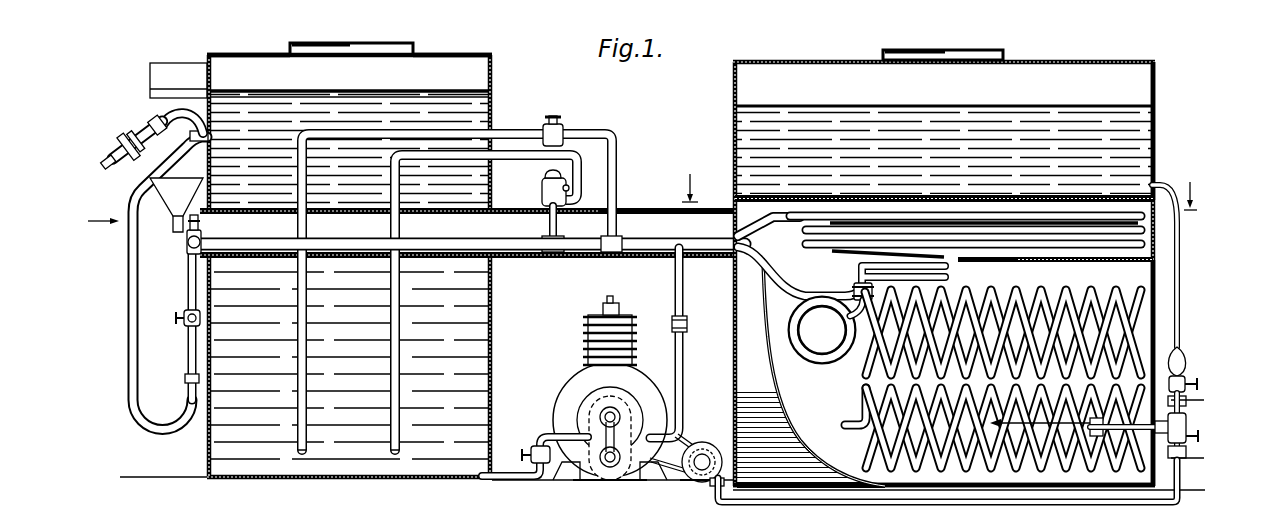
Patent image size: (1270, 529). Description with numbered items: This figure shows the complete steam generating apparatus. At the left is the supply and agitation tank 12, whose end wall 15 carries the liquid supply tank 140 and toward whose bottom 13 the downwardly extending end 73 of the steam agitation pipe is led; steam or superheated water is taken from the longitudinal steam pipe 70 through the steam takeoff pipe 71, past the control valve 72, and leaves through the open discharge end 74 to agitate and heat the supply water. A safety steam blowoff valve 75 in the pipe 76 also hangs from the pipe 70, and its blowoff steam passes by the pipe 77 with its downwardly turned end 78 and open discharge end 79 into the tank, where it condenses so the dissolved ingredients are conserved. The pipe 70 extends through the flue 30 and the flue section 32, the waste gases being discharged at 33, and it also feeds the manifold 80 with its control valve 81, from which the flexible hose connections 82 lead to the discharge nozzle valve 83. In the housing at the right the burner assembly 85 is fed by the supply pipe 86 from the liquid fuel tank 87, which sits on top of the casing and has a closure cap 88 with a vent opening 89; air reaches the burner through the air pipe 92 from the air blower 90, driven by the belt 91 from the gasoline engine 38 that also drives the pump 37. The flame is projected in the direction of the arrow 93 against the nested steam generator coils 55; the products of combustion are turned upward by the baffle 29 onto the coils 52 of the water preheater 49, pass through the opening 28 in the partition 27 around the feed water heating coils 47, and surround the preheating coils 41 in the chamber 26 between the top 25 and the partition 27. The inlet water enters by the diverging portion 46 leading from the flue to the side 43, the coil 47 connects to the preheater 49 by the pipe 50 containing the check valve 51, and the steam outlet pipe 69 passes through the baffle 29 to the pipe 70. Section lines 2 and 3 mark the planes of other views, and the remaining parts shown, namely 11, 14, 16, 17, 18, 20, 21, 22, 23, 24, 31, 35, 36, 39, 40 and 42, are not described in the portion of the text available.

The section line 2- 2 is at (937, 189).
The section line 3- 3 is at (92, 217).
The floor 11 is at (155, 477).
The supply and agitation tank 12 is at (200, 95).
The bottom of the tank 13 is at (345, 480).
The upper tank 14 is at (495, 80).
The end wall 15 is at (205, 62).
The cover 16 is at (452, 56).
The lid handle 17 is at (392, 49).
The lid 18 is at (343, 52).
The second tank 20 is at (1165, 264).
The tank bottom 21 is at (1018, 491).
The tank side wall 22 is at (1158, 310).
The casing wall 23 is at (730, 92).
The partitioned chamber 24 is at (745, 382).
The top 25 is at (815, 197).
The chamber 26 is at (1150, 237).
The partition 27 is at (1065, 262).
The opening 28 is at (960, 262).
The baffle 29 is at (800, 432).
The flue 30 is at (635, 210).
The plate 31 is at (695, 212).
The section of the flue 32 is at (365, 210).
The discharge 33 is at (175, 218).
The suction pipe 35 is at (510, 480).
The valve 36 is at (535, 450).
The pump 37 is at (595, 412).
The gasoline engine 38 is at (595, 348).
The discharge pipe 39 is at (676, 370).
The pipe coupling 40 is at (688, 318).
The preheating coils 41 is at (975, 232).
The heating tube 42 is at (1050, 232).
The side 43 is at (915, 210).
The diverging portion 46 is at (757, 218).
The feed water heating coils 47 is at (855, 267).
The water preheater 49 is at (826, 352).
The pipe 50 is at (856, 306).
The check valve 51 is at (853, 290).
The coils 52 is at (840, 363).
The steam generator coils 55 is at (1060, 478).
The steam outlet pipe 69 is at (762, 268).
The longitudinal steam pipe 70 is at (655, 252).
The steam takeoff pipe 71 is at (505, 136).
The control valve 72 is at (562, 126).
The downwardly extending end 73 is at (305, 325).
The open discharge end 74 is at (300, 452).
The safety steam blowoff valve 75 is at (540, 186).
The pipe 76 is at (545, 227).
The pipe 77 is at (425, 160).
The downwardly turned end 78 is at (397, 345).
The open discharge end 79 is at (397, 452).
The manifold 80 is at (190, 349).
The control valve 81 is at (186, 312).
The flexible hose connections 82 is at (127, 290).
The discharge nozzle valve 83 is at (143, 115).
The burner assembly 85 is at (1196, 417).
The supply pipe 86 is at (1181, 292).
The liquid fuel tank 87 is at (1164, 127).
The closure cap 88 is at (985, 58).
The vent opening 89 is at (940, 58).
The air blower 90 is at (697, 478).
The belt 91 is at (688, 440).
The air pipe 92 is at (1140, 506).
The arrow 93 is at (1040, 423).
The liquid supply tank 140 is at (150, 73).